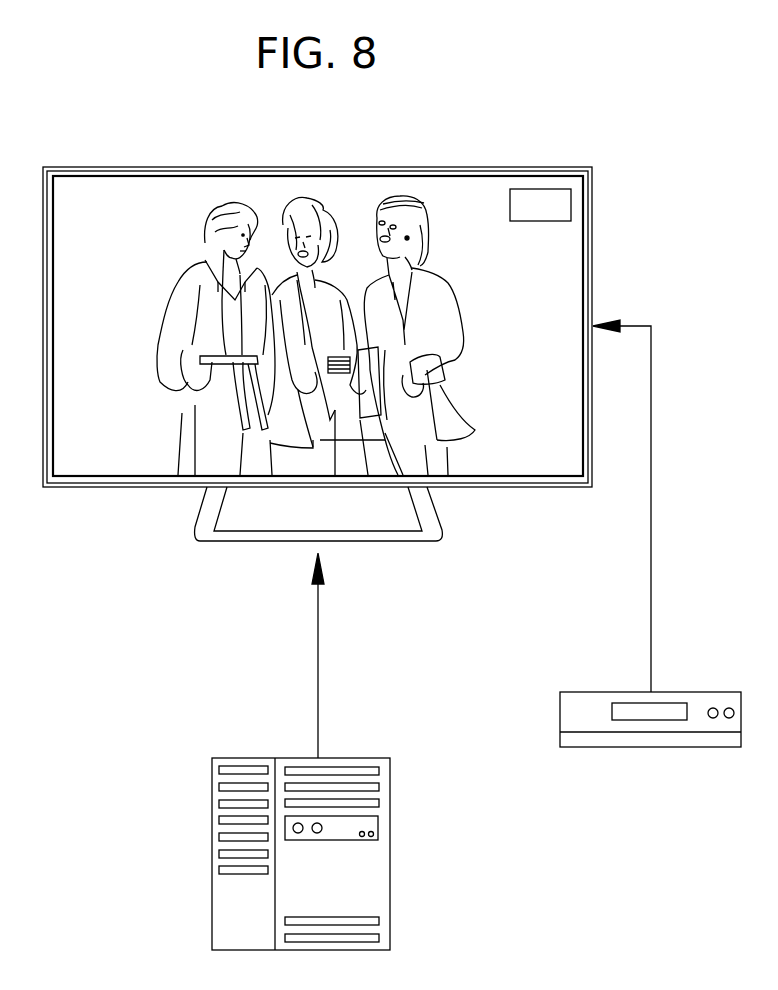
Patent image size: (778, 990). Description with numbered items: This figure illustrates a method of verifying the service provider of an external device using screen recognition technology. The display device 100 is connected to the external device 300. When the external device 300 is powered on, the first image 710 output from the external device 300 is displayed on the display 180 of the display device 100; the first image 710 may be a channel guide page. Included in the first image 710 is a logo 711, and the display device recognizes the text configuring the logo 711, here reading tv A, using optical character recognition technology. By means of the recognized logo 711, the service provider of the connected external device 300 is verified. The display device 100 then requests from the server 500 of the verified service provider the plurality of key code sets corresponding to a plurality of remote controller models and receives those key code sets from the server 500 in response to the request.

The display device 100 is at (205, 512).
The display 180 is at (310, 152).
The first image 710 is at (550, 272).
The logo 711 is at (571, 203).
The external device 300 is at (660, 747).
The server 500 is at (390, 866).